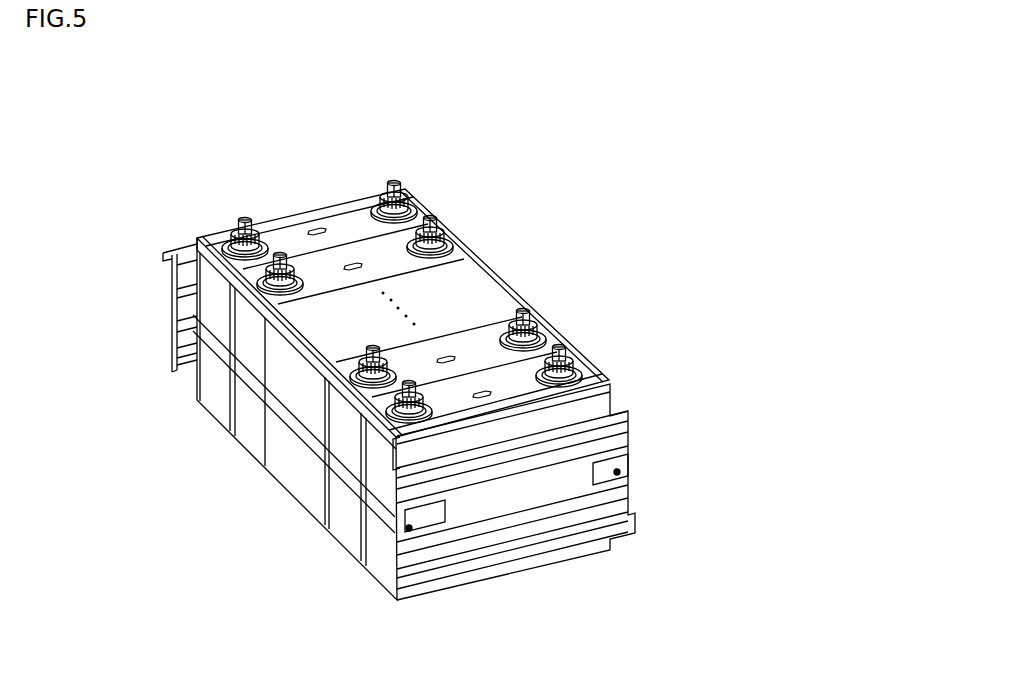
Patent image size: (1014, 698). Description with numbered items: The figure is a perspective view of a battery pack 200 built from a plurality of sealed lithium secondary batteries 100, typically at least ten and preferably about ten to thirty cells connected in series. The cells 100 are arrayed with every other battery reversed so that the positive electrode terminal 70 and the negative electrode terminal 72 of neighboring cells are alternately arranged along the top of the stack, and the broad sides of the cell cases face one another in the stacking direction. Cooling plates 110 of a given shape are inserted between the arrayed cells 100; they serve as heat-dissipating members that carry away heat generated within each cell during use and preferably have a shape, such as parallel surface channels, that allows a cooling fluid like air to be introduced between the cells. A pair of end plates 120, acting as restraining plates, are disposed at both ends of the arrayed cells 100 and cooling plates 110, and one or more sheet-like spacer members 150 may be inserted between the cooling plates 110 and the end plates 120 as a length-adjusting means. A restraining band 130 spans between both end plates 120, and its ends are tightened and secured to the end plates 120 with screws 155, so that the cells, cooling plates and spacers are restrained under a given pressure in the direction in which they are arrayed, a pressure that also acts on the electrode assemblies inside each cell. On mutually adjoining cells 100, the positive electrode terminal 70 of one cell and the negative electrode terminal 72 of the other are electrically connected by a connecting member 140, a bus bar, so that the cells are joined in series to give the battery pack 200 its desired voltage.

The battery pack 200 is at (688, 117).
The sealed lithium secondary battery 100 is at (332, 224).
The cooling plate 110 is at (612, 383).
The end plate 120 is at (170, 258).
The restraining band 130 is at (352, 488).
The connecting member 140 is at (275, 218).
The spacer member 150 is at (620, 412).
The screw 155 is at (630, 471).
The positive electrode terminal 70 is at (278, 262).
The negative electrode terminal 72 is at (240, 220).